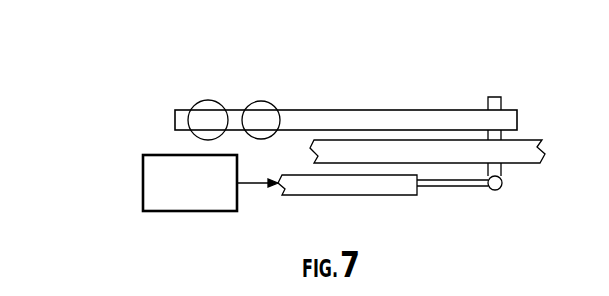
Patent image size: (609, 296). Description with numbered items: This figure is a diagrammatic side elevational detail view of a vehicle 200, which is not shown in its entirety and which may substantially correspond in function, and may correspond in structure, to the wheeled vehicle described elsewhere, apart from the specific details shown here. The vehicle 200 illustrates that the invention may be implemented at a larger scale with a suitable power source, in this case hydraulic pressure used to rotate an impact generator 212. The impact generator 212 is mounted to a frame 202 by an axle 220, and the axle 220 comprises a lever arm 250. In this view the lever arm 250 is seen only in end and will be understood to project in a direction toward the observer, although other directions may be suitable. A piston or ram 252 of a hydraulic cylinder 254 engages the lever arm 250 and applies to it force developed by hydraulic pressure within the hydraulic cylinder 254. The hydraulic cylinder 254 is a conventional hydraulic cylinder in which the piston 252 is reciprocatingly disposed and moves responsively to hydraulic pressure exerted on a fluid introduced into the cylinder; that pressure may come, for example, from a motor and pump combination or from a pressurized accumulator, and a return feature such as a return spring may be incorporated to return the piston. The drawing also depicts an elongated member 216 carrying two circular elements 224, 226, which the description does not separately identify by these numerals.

The vehicle 200 is at (115, 60).
The impact generator 212 is at (118, 152).
The hold-down bar 216 is at (360, 110).
The axle 220 is at (501, 103).
The roller 224 is at (209, 100).
The roller 226 is at (263, 101).
The frame 202 is at (523, 143).
The lever arm 250 is at (497, 190).
The piston 252 is at (447, 188).
The hydraulic cylinder 254 is at (368, 196).